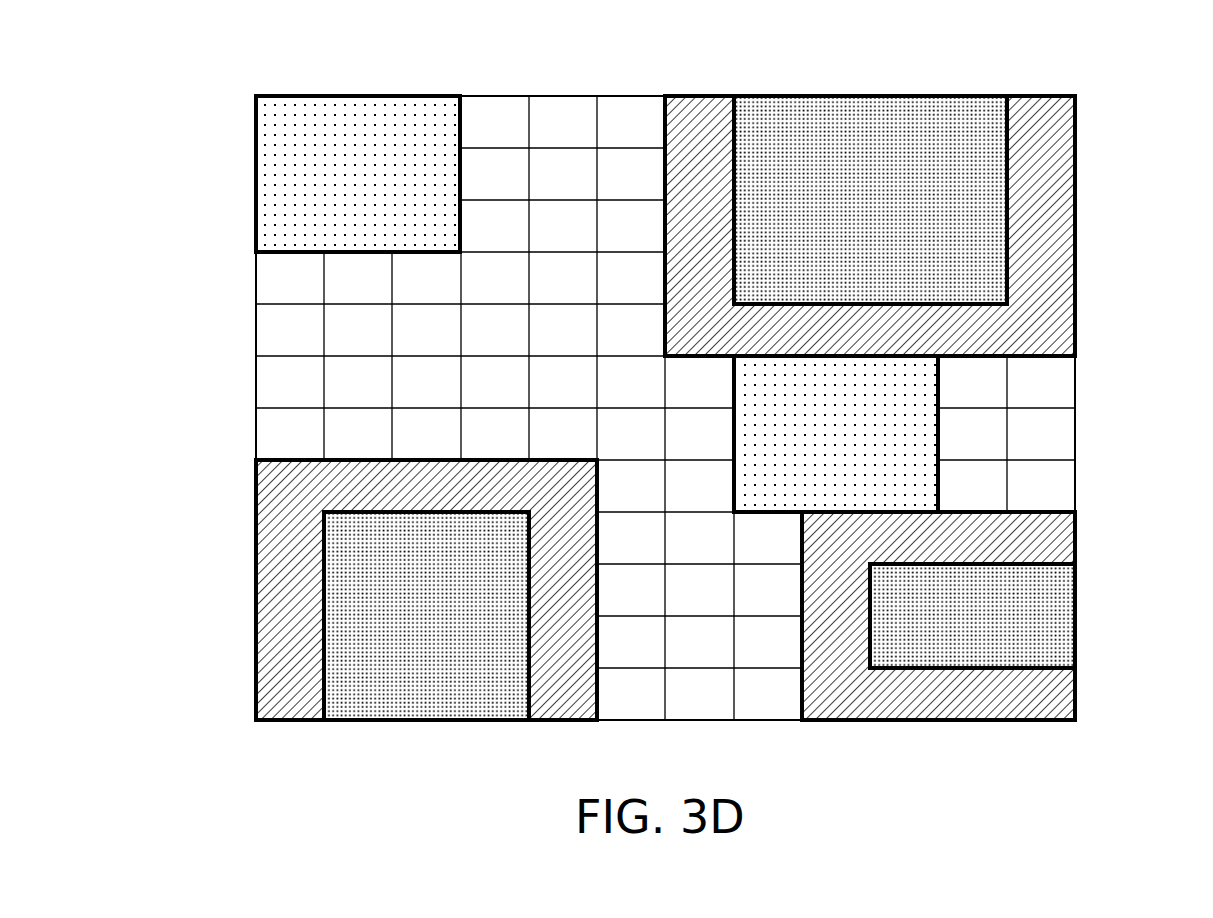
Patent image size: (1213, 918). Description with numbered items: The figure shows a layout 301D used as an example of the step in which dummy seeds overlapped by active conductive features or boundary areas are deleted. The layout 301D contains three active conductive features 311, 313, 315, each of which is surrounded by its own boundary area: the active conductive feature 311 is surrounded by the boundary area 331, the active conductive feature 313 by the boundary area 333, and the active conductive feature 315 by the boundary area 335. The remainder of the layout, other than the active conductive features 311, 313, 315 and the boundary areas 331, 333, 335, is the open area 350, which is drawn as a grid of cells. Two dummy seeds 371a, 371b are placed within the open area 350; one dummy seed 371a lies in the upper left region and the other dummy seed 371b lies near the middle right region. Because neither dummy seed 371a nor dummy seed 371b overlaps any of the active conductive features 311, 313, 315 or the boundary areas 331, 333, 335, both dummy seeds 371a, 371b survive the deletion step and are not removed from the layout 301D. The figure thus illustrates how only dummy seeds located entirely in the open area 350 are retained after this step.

The layout 301D is at (590, 87).
The active conductive feature 311 is at (898, 112).
The active conductive feature 313 is at (433, 698).
The active conductive feature 315 is at (1050, 592).
The boundary area 331 is at (1050, 332).
The boundary area 333 is at (302, 698).
The boundary area 335 is at (1050, 537).
The open area 350 is at (280, 328).
The dummy seed 371a is at (292, 178).
The dummy seed 371b is at (890, 438).